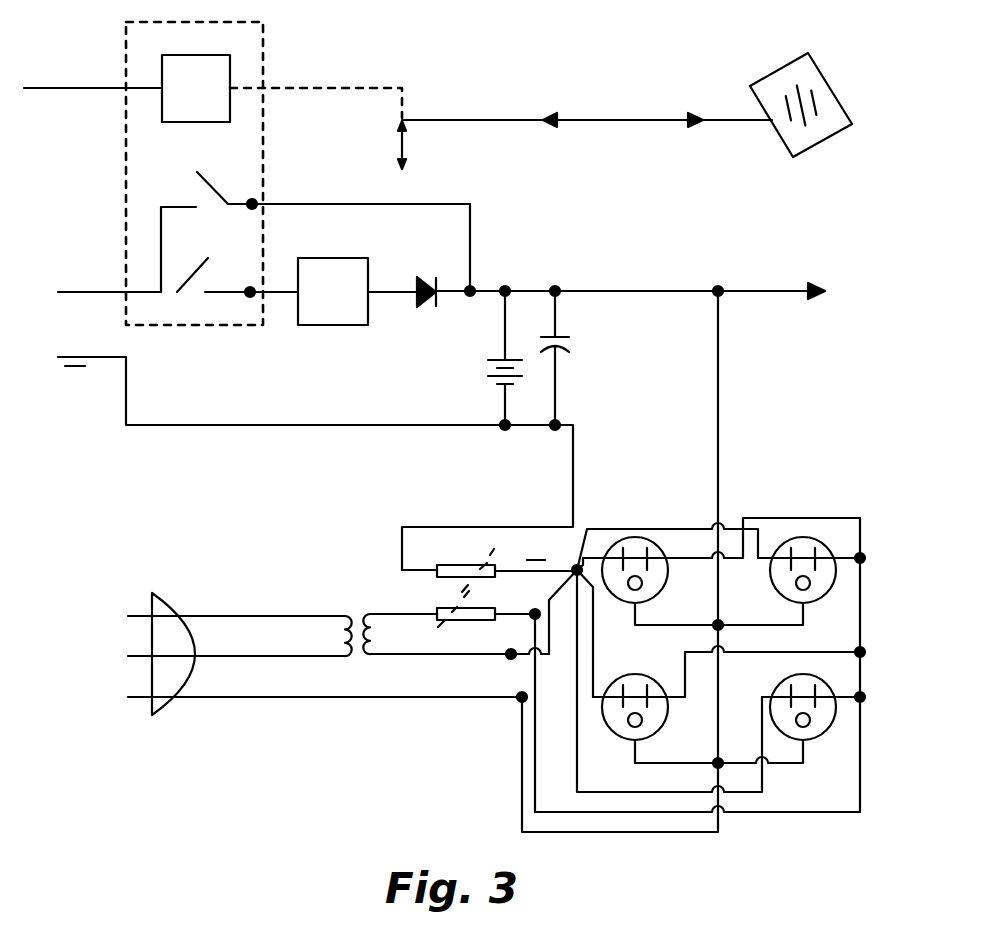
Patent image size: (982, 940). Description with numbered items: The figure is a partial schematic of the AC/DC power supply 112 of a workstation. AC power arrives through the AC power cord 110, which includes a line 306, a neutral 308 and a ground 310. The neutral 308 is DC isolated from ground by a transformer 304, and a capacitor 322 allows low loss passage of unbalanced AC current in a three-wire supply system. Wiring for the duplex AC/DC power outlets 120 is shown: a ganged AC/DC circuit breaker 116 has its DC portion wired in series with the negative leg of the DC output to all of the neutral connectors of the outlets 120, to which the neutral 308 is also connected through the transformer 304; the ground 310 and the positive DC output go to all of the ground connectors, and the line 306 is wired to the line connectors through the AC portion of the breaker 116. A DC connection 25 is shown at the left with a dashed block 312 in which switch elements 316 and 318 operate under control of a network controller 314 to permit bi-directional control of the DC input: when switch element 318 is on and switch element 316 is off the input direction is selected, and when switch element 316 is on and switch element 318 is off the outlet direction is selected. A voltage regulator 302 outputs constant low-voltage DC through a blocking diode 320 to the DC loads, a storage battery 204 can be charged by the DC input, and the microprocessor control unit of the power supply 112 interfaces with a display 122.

The DC power input 25 is at (48, 360).
The AC power cord 110 is at (160, 730).
The AC/DC power supply 112 is at (440, 100).
The circuit breaker 116 is at (425, 592).
The AC/DC power outlets 120 is at (611, 728).
The display 122 is at (771, 68).
The storage battery 204 is at (482, 374).
The voltage regulator 302 is at (348, 326).
The transformer 304 is at (333, 606).
The line 306 is at (240, 613).
The neutral 308 is at (298, 658).
The ground 310 is at (240, 700).
The switching circuit 312 is at (263, 25).
The network controller 314 is at (166, 122).
The switch element 316 is at (215, 206).
The switch element 318 is at (186, 274).
The blocking diode 320 is at (430, 283).
The capacitor 322 is at (576, 334).